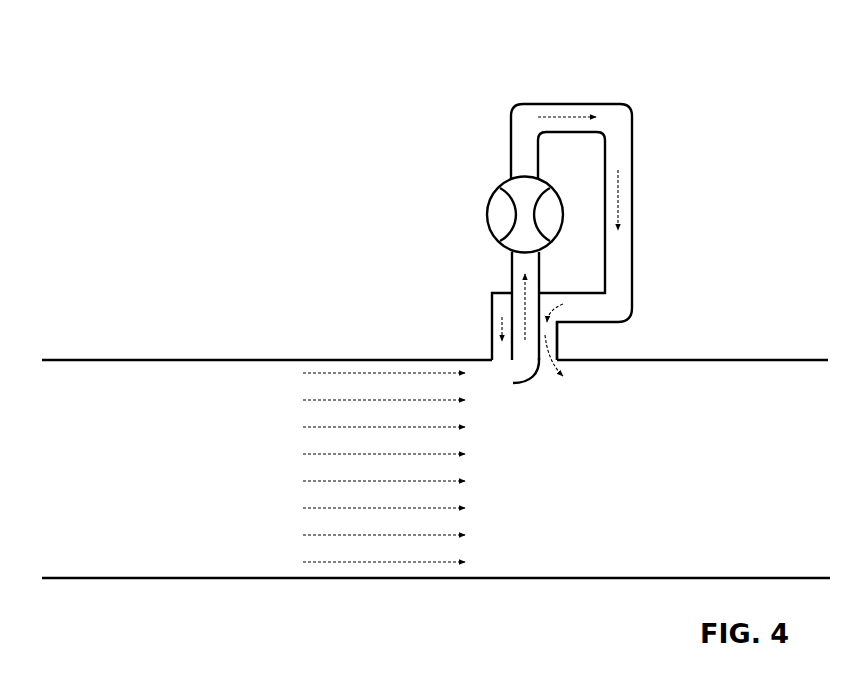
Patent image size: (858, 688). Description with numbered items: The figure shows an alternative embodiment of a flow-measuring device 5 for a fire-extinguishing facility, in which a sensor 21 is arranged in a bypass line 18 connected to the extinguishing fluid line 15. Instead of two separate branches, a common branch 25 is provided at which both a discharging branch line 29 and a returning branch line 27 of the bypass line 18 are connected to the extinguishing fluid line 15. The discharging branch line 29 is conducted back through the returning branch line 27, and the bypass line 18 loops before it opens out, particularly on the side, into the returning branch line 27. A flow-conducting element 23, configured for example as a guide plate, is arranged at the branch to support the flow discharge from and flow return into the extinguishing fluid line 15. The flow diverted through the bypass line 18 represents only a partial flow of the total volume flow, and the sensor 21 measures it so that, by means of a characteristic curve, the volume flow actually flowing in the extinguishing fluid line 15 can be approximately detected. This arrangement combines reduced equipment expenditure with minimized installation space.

The flow-measuring device 5 is at (547, 232).
The extinguishing fluid line 15 is at (274, 360).
The bypass line 18 is at (583, 106).
The sensor 21 is at (489, 209).
The flow-conducting element 23 is at (528, 385).
The common branch 25 is at (479, 343).
The returning branch line 27 is at (563, 340).
The discharging branch line 29 is at (511, 268).